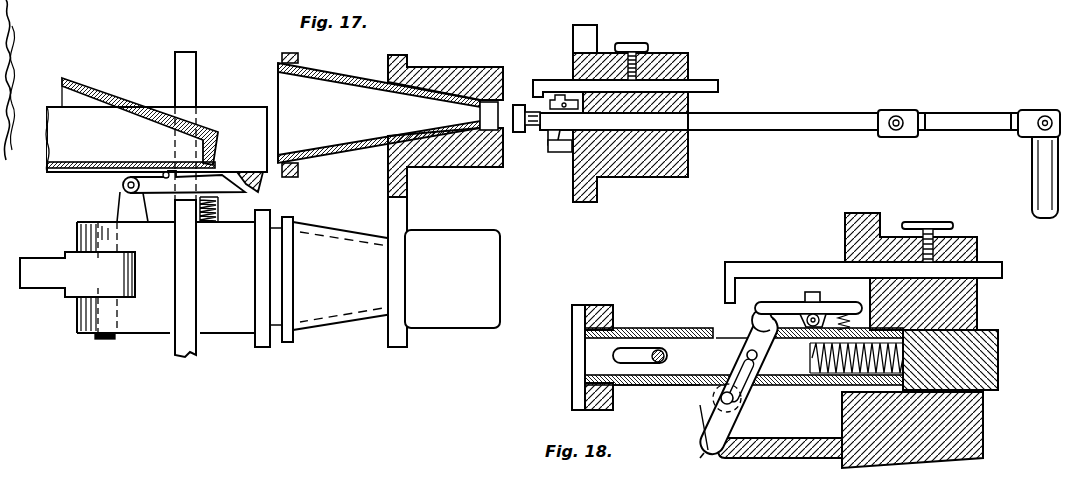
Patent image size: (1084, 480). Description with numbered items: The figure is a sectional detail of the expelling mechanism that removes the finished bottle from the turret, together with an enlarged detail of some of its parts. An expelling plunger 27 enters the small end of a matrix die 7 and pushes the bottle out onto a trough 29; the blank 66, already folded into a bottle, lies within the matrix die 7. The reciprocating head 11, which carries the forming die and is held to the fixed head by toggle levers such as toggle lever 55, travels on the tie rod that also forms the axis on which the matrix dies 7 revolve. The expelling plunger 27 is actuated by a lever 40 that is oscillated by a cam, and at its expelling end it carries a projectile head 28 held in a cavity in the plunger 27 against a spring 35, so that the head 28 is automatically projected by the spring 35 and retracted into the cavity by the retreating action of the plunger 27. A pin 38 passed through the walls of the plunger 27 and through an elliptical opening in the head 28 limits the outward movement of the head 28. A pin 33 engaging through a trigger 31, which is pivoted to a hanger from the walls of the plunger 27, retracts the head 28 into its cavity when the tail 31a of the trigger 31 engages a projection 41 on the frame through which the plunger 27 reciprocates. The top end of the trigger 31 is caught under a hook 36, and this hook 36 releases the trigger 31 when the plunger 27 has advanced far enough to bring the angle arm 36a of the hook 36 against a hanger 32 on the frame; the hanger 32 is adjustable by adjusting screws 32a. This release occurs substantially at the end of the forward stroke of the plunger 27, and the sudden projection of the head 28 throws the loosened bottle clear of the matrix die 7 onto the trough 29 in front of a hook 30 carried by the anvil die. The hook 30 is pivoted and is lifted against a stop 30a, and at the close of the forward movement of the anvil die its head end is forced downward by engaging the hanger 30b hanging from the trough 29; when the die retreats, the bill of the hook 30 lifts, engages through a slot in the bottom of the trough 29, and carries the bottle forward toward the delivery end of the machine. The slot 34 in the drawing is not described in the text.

In FIG. 17, the matrix die 7 is at (372, 78).
In FIG. 17, the reciprocating head 11 is at (197, 349).
In FIG. 17, the expelling plunger 27 is at (745, 115).
In FIG. 18, the expelling plunger 27 is at (995, 334).
In FIG. 17, the projectile head 28 is at (515, 102).
In FIG. 18, the projectile head 28 is at (580, 307).
In FIG. 17, the trough 29 is at (226, 115).
In FIG. 17, the hook 30 is at (247, 192).
In FIG. 17, the stop 30a is at (166, 172).
In FIG. 17, the hanger 30b is at (264, 183).
In FIG. 17, the trigger 31 is at (548, 137).
In FIG. 18, the trigger 31 is at (722, 433).
In FIG. 18, the tail of trigger 31a is at (710, 445).
In FIG. 17, the hanger 32 is at (625, 88).
In FIG. 18, the hanger 32 is at (725, 291).
In FIG. 17, the adjusting screws 32a is at (644, 45).
In FIG. 18, the adjusting screws 32a is at (930, 214).
In FIG. 18, the pin 33 is at (746, 356).
In FIG. 18, the spring 34 is at (770, 349).
In FIG. 18, the spring 35 is at (824, 387).
In FIG. 17, the hook 36 is at (564, 102).
In FIG. 18, the hook 36 is at (788, 310).
In FIG. 18, the angle arm 36a is at (820, 297).
In FIG. 18, the pin 38 is at (657, 365).
In FIG. 17, the lever 40 is at (1033, 152).
In FIG. 17, the projection 41 is at (562, 153).
In FIG. 18, the projection 41 is at (777, 458).
In FIG. 17, the toggle lever 55 is at (42, 260).
In FIG. 17, the blank 66 is at (118, 103).